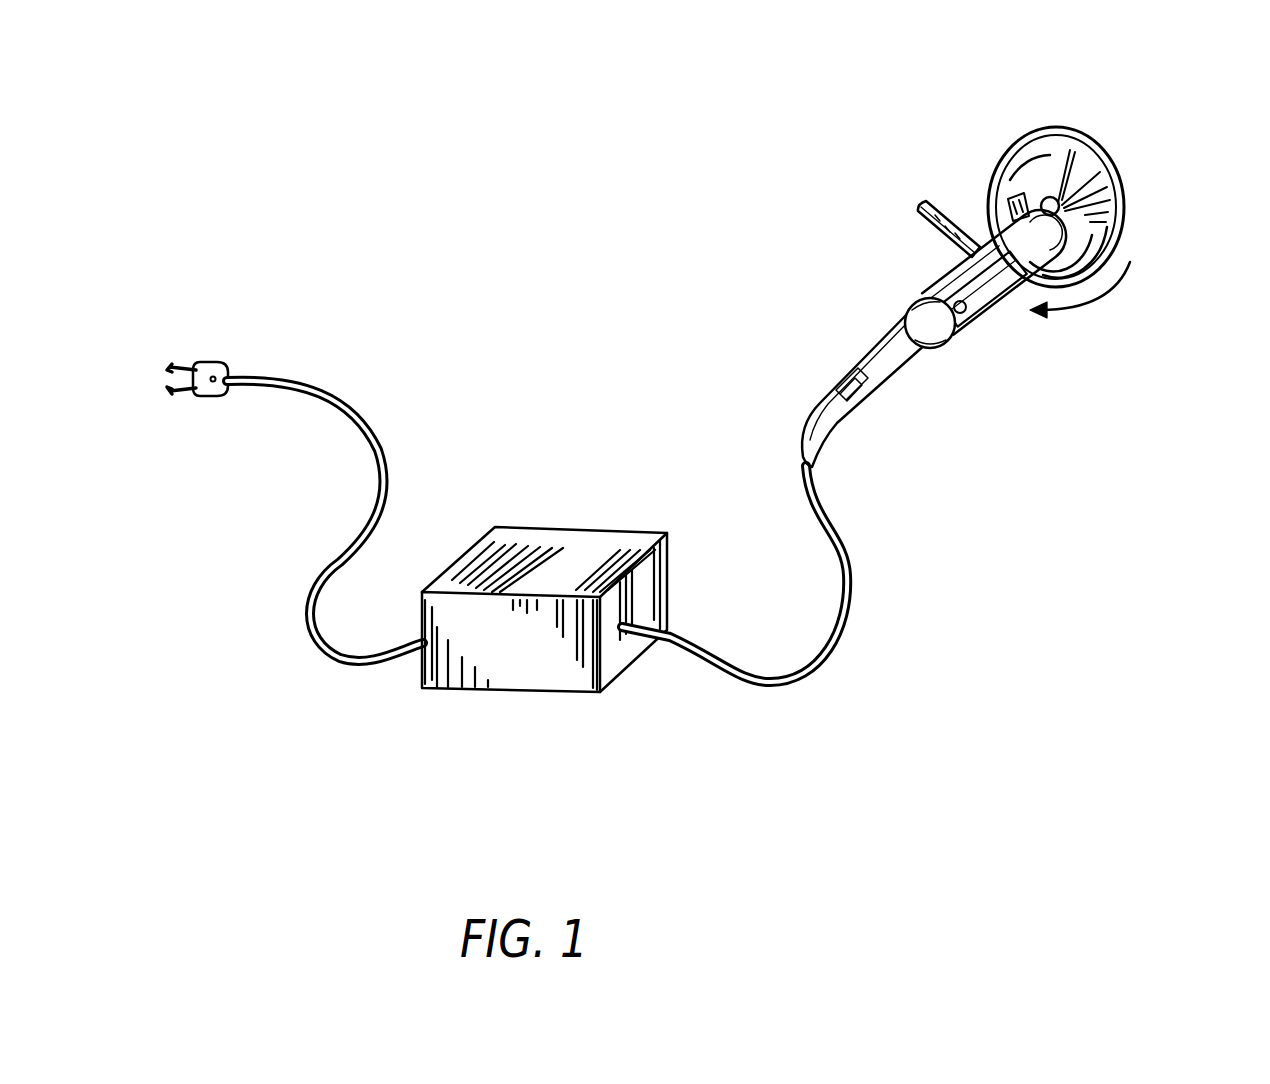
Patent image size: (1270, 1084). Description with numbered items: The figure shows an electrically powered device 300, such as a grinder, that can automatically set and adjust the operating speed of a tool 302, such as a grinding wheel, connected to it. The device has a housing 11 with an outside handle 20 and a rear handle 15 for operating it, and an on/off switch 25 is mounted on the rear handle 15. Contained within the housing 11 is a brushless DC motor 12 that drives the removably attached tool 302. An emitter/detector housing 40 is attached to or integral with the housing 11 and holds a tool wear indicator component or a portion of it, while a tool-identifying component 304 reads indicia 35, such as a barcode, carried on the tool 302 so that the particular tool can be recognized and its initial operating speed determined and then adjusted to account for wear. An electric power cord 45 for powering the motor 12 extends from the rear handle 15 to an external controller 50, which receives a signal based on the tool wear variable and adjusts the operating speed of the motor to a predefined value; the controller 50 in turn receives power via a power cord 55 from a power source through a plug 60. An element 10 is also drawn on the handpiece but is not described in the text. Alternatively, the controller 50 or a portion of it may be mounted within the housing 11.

The electrically powered device 300 is at (965, 491).
The handpiece body 10 is at (942, 362).
The housing 11 is at (980, 325).
The brushless DC motor 12 is at (1012, 312).
The rear handle 15 is at (857, 414).
The outside handle 20 is at (924, 208).
The on/off switch 25 is at (850, 385).
The indicia 35 is at (1078, 220).
The emitter/detector housing 40 is at (992, 215).
The electric power cord 45 is at (825, 660).
The external controller 50 is at (556, 690).
The power cord 55 is at (350, 388).
The plug 60 is at (212, 398).
The tool 302 is at (1124, 205).
The tool-identifying component 304 is at (1023, 130).